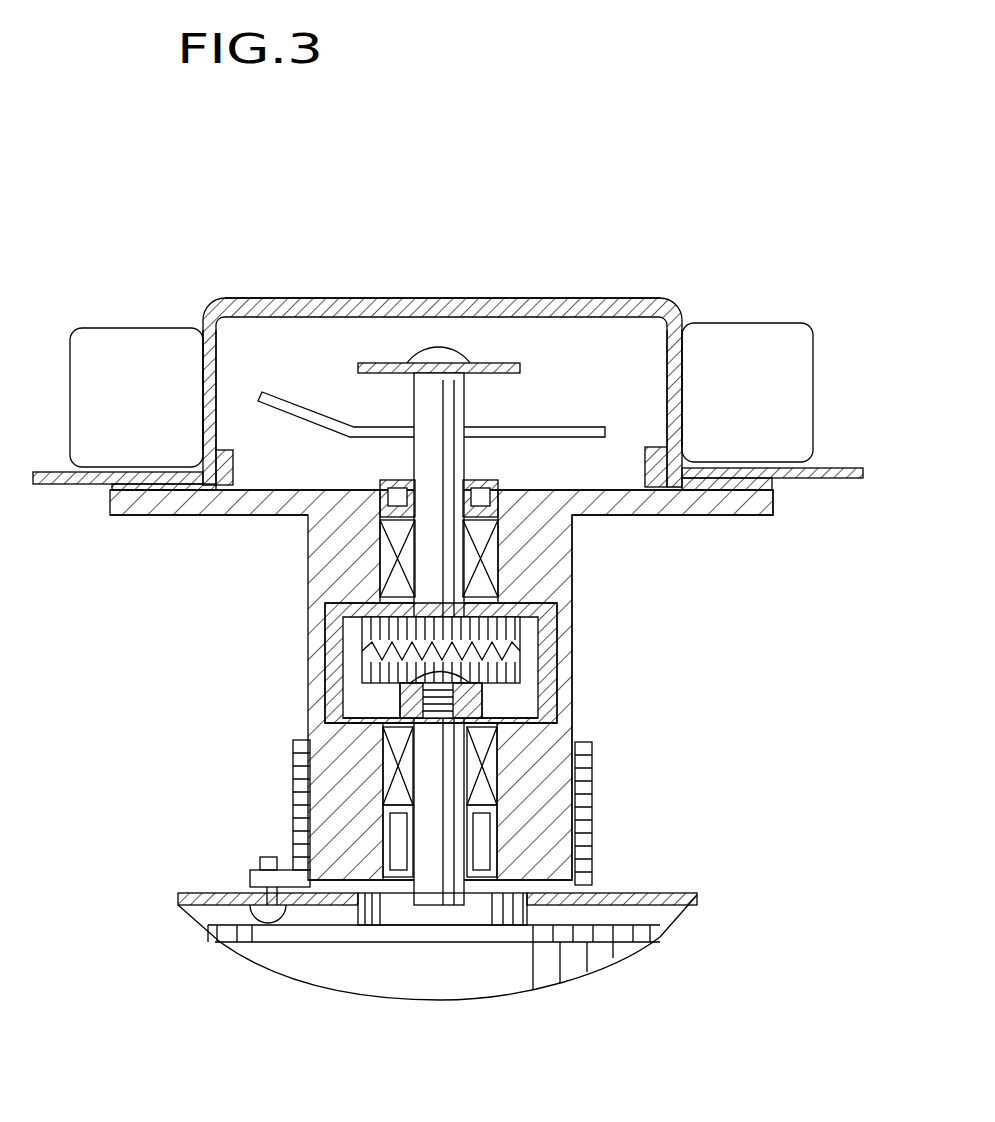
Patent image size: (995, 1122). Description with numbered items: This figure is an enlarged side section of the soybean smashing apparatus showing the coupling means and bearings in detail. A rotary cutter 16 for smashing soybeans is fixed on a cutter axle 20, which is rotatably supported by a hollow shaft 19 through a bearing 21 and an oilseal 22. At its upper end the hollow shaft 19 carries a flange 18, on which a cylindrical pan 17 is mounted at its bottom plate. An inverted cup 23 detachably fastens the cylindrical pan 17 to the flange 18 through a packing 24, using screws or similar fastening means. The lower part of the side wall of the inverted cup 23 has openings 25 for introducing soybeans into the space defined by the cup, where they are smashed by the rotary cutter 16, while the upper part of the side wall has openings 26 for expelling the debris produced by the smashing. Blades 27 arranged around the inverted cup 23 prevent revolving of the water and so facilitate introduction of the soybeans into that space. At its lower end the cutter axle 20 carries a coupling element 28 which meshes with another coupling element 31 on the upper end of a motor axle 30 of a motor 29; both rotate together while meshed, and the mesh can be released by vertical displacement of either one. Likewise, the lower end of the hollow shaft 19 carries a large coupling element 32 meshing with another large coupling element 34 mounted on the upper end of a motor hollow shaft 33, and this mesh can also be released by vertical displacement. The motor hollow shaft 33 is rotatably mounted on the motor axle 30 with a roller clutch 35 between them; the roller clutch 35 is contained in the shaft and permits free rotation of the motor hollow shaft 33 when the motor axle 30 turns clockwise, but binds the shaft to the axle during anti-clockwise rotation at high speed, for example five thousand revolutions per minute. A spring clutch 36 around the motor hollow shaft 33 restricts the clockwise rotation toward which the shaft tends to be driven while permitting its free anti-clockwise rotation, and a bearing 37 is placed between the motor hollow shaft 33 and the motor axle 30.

The rotary cutter 16 is at (533, 428).
The cylindrical pan 17 is at (78, 485).
The flange 18 is at (738, 505).
The hollow shaft 19 is at (560, 562).
The cutter axle 20 is at (453, 467).
The bearing 21 is at (388, 570).
The oilseal 22 is at (332, 523).
The inverted cup 23 is at (407, 298).
The packing 24 is at (760, 483).
The openings 25 is at (205, 427).
The openings 26 is at (207, 357).
The blades 27 is at (114, 338).
The coupling element 28 is at (500, 637).
The motor 29 is at (333, 957).
The motor axle 30 is at (433, 867).
The coupling element 31 is at (490, 690).
The large coupling element 32 is at (332, 655).
The motor hollow shaft 33 is at (540, 790).
The large coupling element 34 is at (340, 710).
The roller clutch 35 is at (497, 848).
The spring clutch 36 is at (300, 788).
The bearing 37 is at (500, 766).